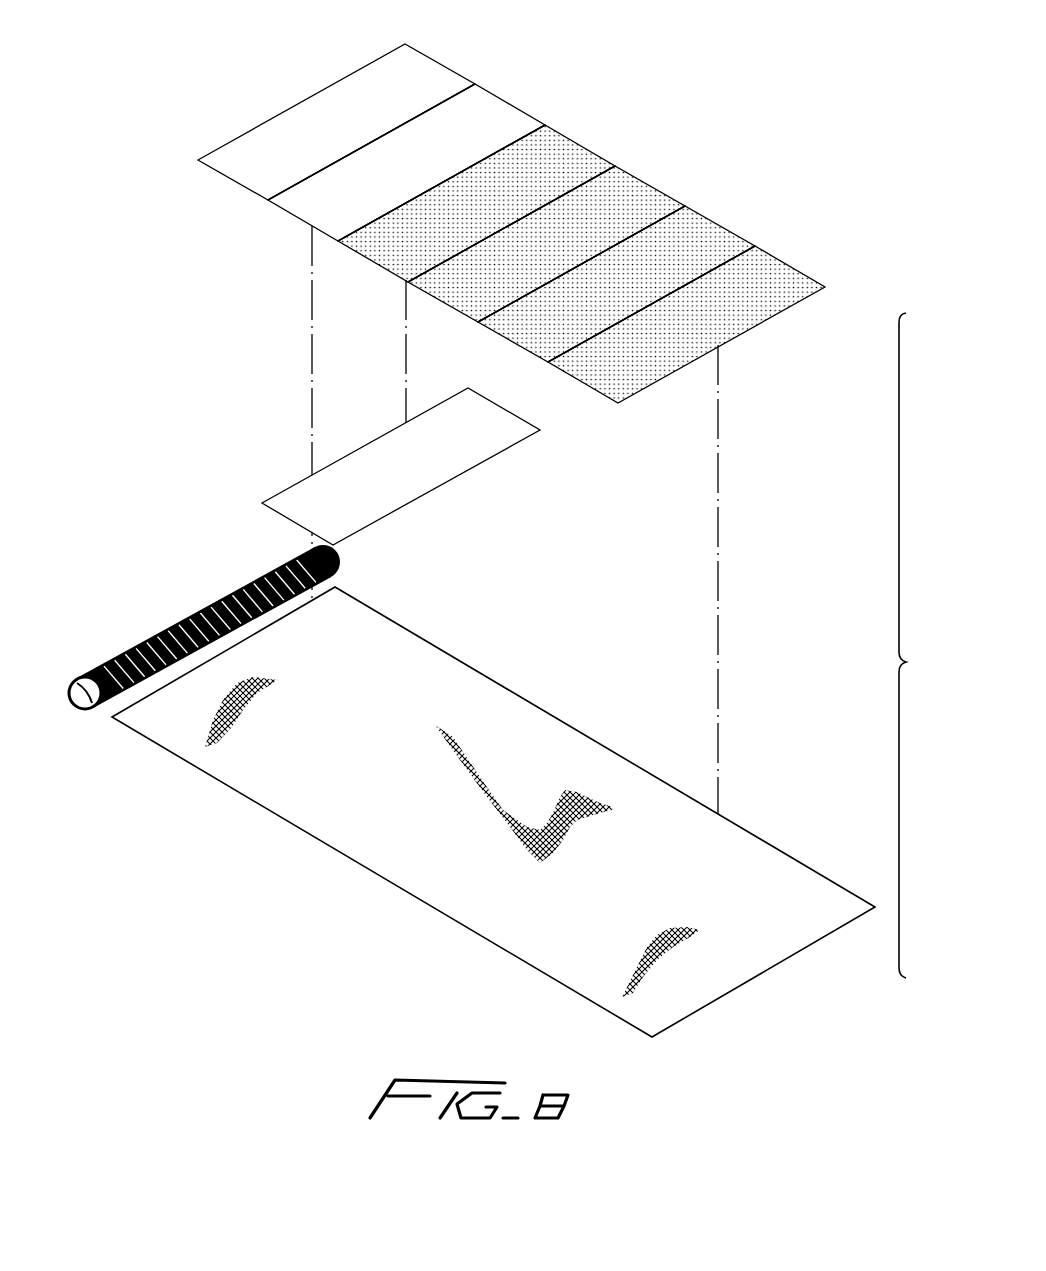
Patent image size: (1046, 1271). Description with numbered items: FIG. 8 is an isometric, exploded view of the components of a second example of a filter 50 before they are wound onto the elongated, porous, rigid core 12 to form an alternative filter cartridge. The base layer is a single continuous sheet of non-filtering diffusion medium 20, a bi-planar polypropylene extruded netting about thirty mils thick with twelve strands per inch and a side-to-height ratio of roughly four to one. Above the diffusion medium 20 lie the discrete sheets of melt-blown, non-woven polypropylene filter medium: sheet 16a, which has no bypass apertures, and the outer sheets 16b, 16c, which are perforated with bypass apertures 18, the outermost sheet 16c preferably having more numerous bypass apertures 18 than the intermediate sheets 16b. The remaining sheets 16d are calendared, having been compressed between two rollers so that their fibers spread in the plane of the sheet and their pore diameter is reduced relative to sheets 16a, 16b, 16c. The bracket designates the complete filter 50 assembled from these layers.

The core 12 is at (157, 635).
The sheet of filter medium 16a is at (485, 457).
The intermediate sheets of filter medium 16b is at (582, 162).
The outermost sheet of filter medium 16c is at (707, 237).
The calendared sheets of filter medium 16d is at (440, 77).
The bypass apertures 18 is at (477, 293).
The sheet of diffusion medium 20 is at (320, 796).
The filter 50 is at (897, 698).